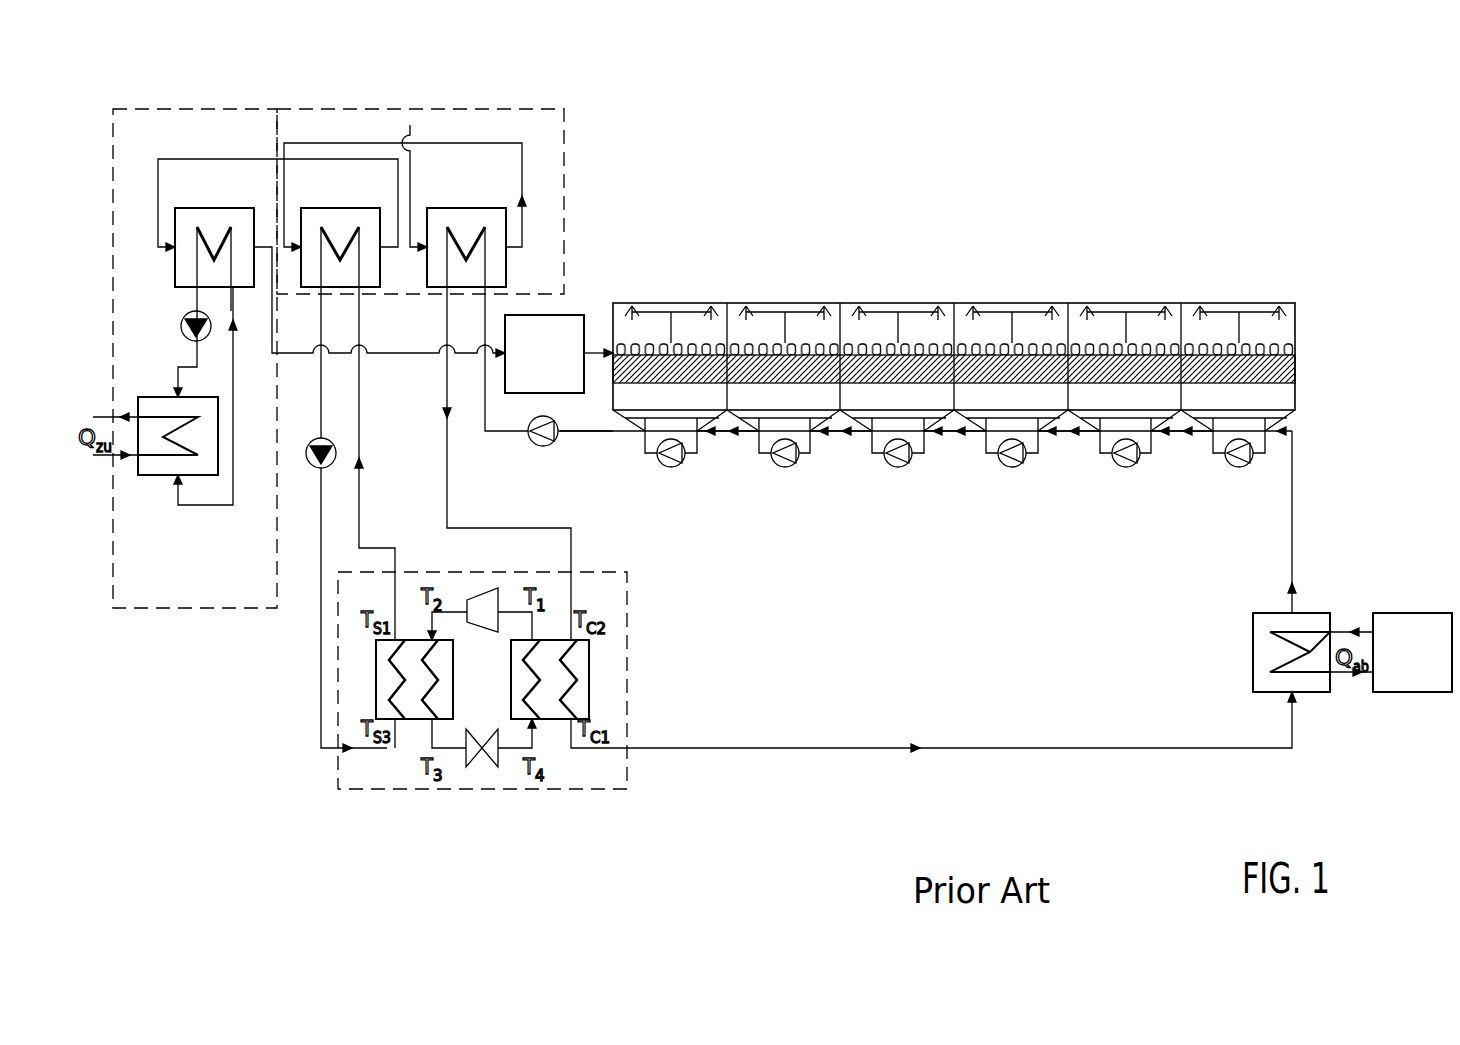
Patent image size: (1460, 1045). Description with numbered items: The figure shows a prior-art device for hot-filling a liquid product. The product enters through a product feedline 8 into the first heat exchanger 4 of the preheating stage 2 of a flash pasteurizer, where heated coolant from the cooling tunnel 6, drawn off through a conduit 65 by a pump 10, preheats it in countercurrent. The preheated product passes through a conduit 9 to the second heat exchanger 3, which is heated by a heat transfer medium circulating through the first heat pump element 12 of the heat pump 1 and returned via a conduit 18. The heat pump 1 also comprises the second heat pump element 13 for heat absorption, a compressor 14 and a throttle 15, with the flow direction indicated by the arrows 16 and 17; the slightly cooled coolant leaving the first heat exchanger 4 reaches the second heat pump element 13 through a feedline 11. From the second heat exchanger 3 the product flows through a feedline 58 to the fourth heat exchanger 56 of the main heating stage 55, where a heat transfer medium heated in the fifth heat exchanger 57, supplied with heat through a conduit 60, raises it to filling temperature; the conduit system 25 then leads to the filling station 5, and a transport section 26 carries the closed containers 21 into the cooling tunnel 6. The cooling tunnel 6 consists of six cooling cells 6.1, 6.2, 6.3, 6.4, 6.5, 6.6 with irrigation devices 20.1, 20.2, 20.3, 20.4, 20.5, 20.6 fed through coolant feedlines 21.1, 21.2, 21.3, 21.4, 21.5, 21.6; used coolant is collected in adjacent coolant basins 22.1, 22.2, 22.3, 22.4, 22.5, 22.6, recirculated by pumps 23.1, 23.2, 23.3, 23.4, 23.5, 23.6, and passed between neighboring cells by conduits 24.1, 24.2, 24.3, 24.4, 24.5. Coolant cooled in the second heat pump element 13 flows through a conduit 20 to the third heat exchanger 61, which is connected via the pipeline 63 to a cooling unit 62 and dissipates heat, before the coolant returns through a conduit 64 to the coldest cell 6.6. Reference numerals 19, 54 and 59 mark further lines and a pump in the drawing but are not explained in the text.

The heat pump 1 is at (600, 572).
The preheating stage 2 is at (565, 130).
The second heat exchanger 3 is at (341, 208).
The first heat exchanger 4 is at (466, 208).
The filling station 5 is at (574, 315).
The cooling tunnel 6 is at (954, 354).
The cooling cell 6.1 is at (676, 325).
The cooling cell 6.2 is at (789, 325).
The cooling cell 6.3 is at (903, 325).
The cooling cell 6.4 is at (1017, 325).
The cooling cell 6.5 is at (1130, 325).
The cooling cell 6.6 is at (1243, 291).
The product feedline 8 is at (411, 128).
The conduit 9 is at (523, 181).
The pump 10 is at (536, 444).
The feedline 11 is at (450, 481).
The first heat pump element 12 is at (376, 683).
The second heat pump element 13 is at (589, 683).
The compressor 14 is at (476, 598).
The throttle 15 is at (484, 764).
The direction of flow 16 is at (436, 632).
The direction of flow 17 is at (528, 729).
The conduit 18 is at (362, 481).
The line 19 is at (323, 531).
The conduit 20 is at (748, 748).
The filled containers 21 is at (626, 326).
The coolant feedline 21.1 is at (658, 403).
The coolant feedline 21.2 is at (772, 403).
The coolant feedline 21.3 is at (885, 403).
The coolant feedline 21.4 is at (999, 403).
The coolant feedline 21.5 is at (1113, 403).
The coolant feedline 21.6 is at (1226, 403).
The coolant basin 22.1 is at (659, 460).
The coolant basin 22.2 is at (773, 460).
The coolant basin 22.3 is at (886, 460).
The coolant basin 22.4 is at (1000, 460).
The coolant basin 22.5 is at (1114, 460).
The coolant basin 22.6 is at (1227, 460).
The pump 23.1 is at (690, 458).
The pump 23.2 is at (804, 458).
The pump 23.3 is at (917, 458).
The pump 23.4 is at (1031, 458).
The pump 23.5 is at (1145, 458).
The pump 23.6 is at (1258, 458).
The conduit 24.1 is at (726, 434).
The conduit 24.2 is at (840, 434).
The conduit 24.3 is at (953, 434).
The conduit 24.4 is at (1067, 434).
The conduit 24.5 is at (1181, 434).
The irrigation device 20.1 is at (699, 312).
The irrigation device 20.2 is at (813, 312).
The irrigation device 20.3 is at (926, 312).
The irrigation device 20.4 is at (1040, 312).
The irrigation device 20.5 is at (1154, 312).
The irrigation device 20.6 is at (1267, 312).
The conduit system 25 is at (416, 353).
The transport section 26 is at (593, 353).
The pump 54 is at (329, 440).
The main heating stage 55 is at (140, 109).
The fourth heat exchanger 56 is at (216, 208).
The fifth heat exchanger 57 is at (156, 397).
The feedline 58 is at (173, 159).
The line 59 is at (234, 505).
The conduit 60 is at (105, 415).
The third heat exchanger 61 is at (1316, 613).
The cooling tunnel 62 is at (1430, 613).
The pipeline 63 is at (1344, 630).
The conduit 64 is at (1296, 554).
The conduit 65 is at (593, 434).